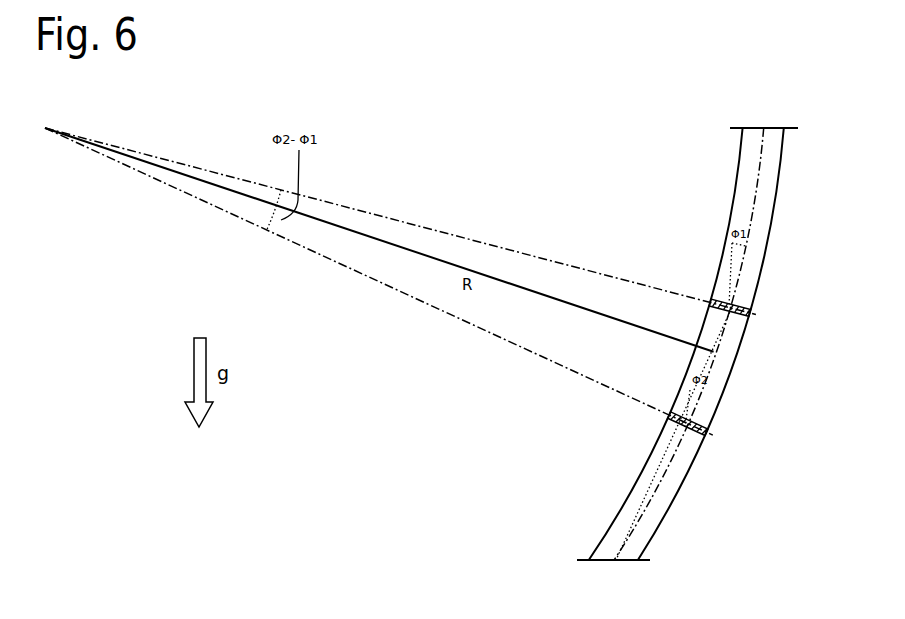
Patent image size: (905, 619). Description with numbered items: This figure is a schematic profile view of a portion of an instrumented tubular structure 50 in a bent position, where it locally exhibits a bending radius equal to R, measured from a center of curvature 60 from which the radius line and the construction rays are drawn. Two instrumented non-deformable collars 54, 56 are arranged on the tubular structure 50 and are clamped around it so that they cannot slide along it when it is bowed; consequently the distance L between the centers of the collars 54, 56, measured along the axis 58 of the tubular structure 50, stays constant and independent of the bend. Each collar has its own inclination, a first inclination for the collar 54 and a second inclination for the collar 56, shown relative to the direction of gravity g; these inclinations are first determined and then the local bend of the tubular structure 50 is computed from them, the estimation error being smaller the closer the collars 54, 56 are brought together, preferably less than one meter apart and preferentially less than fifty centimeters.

The tubular structure 50 is at (763, 208).
The instrumented non-deformable collar 54 is at (752, 311).
The instrumented non-deformable collar 56 is at (706, 438).
The pipe center axis 58 is at (717, 337).
The center of curvature 60 is at (46, 130).